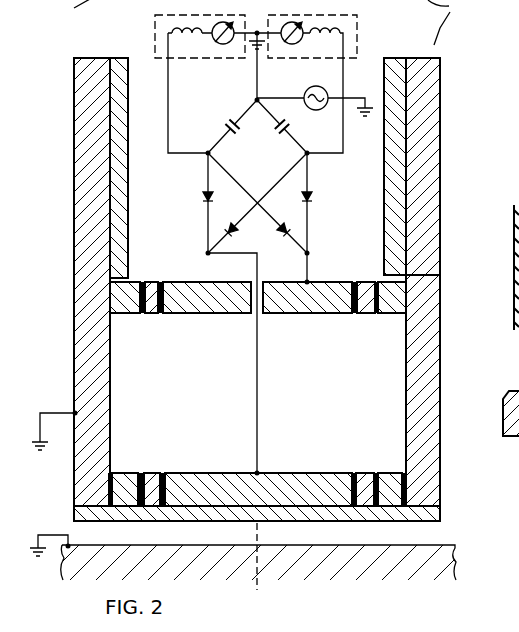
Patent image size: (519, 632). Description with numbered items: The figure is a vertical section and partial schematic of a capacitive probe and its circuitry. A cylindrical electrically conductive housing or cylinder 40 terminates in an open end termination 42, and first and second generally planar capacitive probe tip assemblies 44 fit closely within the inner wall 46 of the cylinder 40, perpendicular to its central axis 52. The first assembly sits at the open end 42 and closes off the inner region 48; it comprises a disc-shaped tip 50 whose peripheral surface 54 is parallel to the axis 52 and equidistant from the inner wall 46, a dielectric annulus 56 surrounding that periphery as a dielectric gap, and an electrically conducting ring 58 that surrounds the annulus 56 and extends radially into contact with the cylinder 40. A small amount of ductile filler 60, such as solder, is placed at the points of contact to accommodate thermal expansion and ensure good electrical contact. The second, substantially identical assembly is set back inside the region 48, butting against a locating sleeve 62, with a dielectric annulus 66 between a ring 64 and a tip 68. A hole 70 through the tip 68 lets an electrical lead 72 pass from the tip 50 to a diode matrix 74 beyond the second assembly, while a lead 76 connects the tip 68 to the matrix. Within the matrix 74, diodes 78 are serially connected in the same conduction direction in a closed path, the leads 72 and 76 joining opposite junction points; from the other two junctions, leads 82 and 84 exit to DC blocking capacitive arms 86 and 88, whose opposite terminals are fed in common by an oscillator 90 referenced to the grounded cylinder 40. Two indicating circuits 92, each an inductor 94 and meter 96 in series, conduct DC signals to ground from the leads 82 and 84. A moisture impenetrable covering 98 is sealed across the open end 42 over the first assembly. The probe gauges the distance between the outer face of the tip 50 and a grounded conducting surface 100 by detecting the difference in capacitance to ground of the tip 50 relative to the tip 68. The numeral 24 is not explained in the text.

The conduit 24 is at (261, 22).
The cylinder 40 is at (428, 83).
The open end termination 42 is at (430, 500).
The capacitive probe tip assemblies 44 is at (296, 317).
The inner wall 46 is at (405, 395).
The inner region 48 is at (222, 388).
The tip 50 is at (231, 480).
The central axis 52 is at (268, 536).
The peripheral surface 54 is at (164, 480).
The dielectric annulus 56 is at (362, 470).
The electrically conducting ring 58 is at (125, 473).
The filler 60 is at (141, 473).
The locating sleeve 62 is at (392, 65).
The ring 64 is at (122, 311).
The dielectric annulus 66 is at (156, 311).
The tip 68 is at (200, 311).
The hole 70 is at (255, 287).
The electrical lead 72 is at (260, 393).
The diode matrix 74 is at (204, 222).
The electrical lead 76 is at (309, 266).
The diodes 78 is at (204, 197).
The electrical conduction lead 82 is at (304, 148).
The electrical conduction lead 84 is at (206, 148).
The capacitive arm 86 is at (226, 124).
The capacitive arm 88 is at (291, 130).
The oscillator 90 is at (304, 92).
The indicating circuits 92 is at (155, 40).
The inductor 94 is at (185, 43).
The meter 96 is at (214, 44).
The moisture impenetrable covering 98 is at (441, 508).
The grounded conducting surface 100 is at (440, 545).